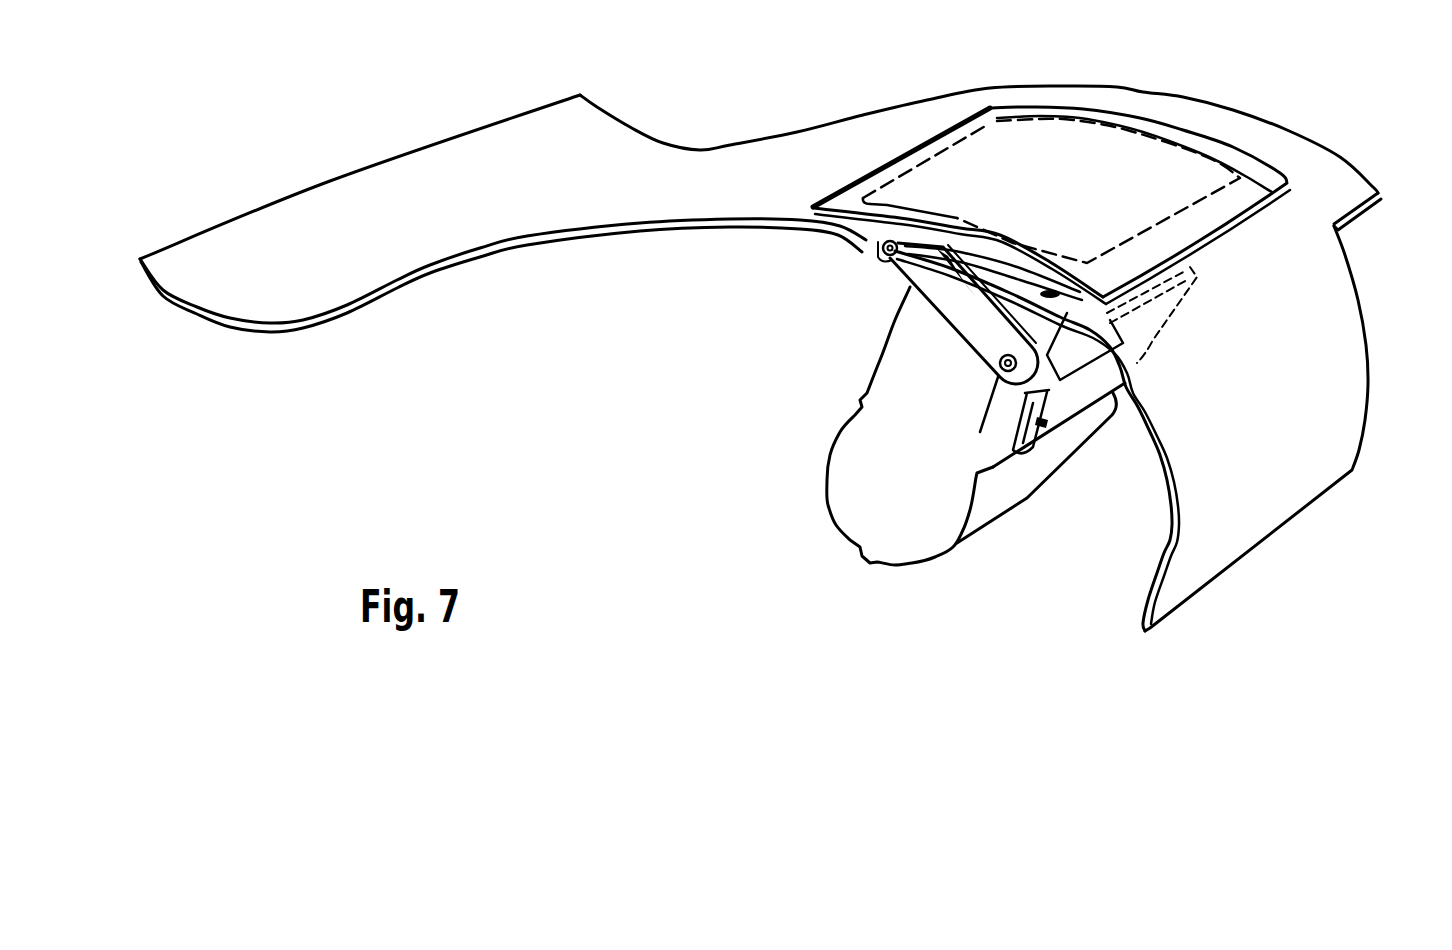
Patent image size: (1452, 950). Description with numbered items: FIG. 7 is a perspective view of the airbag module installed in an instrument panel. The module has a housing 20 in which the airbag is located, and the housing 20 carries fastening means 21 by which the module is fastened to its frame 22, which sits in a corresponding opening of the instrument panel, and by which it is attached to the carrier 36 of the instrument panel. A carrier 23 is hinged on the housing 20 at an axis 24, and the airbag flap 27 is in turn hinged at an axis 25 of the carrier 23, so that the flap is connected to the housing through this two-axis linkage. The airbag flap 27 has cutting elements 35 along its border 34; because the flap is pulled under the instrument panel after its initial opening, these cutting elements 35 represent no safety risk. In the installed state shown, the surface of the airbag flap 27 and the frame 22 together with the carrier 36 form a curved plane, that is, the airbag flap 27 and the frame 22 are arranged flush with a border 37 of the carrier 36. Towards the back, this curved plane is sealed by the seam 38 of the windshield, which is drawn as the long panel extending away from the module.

The housing 20 is at (857, 500).
The fastening means 21 is at (850, 248).
The frame 22 is at (1243, 163).
The carrier 23 is at (969, 313).
The axis 24 is at (1004, 373).
The axis 25 is at (877, 258).
The airbag flap 27 is at (1013, 132).
The border 34 is at (1122, 130).
The cutting elements 35 is at (1083, 123).
The carrier 36 is at (1332, 373).
The border 37 is at (897, 157).
The seam 38 is at (325, 180).